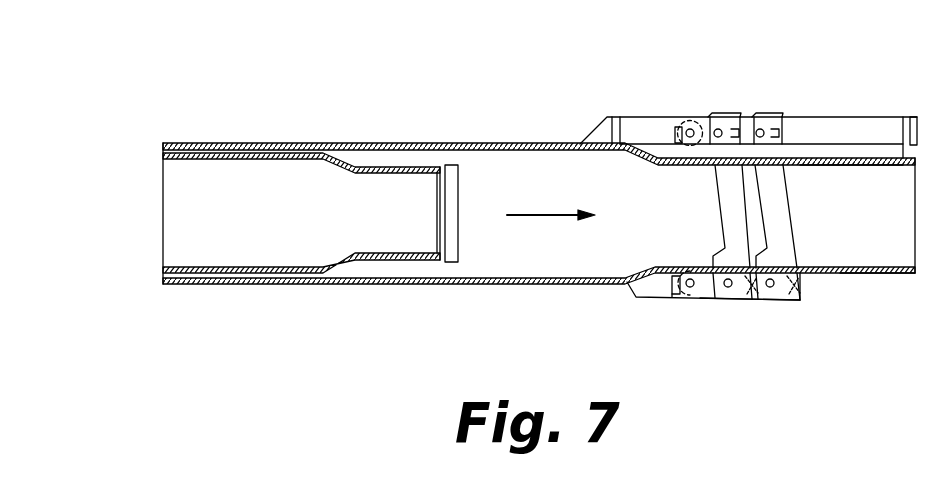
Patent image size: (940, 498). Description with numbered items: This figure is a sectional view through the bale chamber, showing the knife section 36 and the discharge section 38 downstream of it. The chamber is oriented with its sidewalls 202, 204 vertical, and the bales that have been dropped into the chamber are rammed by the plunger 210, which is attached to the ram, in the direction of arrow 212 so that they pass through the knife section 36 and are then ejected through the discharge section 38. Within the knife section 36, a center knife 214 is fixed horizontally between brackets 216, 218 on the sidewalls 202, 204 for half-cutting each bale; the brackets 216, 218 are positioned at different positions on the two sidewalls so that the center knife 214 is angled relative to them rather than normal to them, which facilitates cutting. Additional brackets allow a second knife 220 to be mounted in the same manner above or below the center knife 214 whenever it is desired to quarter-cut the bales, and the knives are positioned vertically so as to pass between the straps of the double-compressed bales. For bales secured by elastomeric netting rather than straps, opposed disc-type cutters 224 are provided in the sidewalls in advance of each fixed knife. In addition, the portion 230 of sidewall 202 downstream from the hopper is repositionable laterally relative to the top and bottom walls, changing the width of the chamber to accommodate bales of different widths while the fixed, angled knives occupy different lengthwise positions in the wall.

The knife section 36 is at (779, 333).
The discharge section 38 is at (868, 274).
The sidewall 202 is at (563, 143).
The sidewall 204 is at (472, 285).
The plunger 210 is at (373, 170).
The arrow 212 is at (530, 215).
The center knife 214 is at (718, 219).
The lower bracket 216 is at (710, 302).
The upper bracket 218 is at (743, 117).
The knife 220 is at (788, 208).
The disc-type cutter 224 is at (680, 121).
The portion of sidewall 230 is at (817, 167).